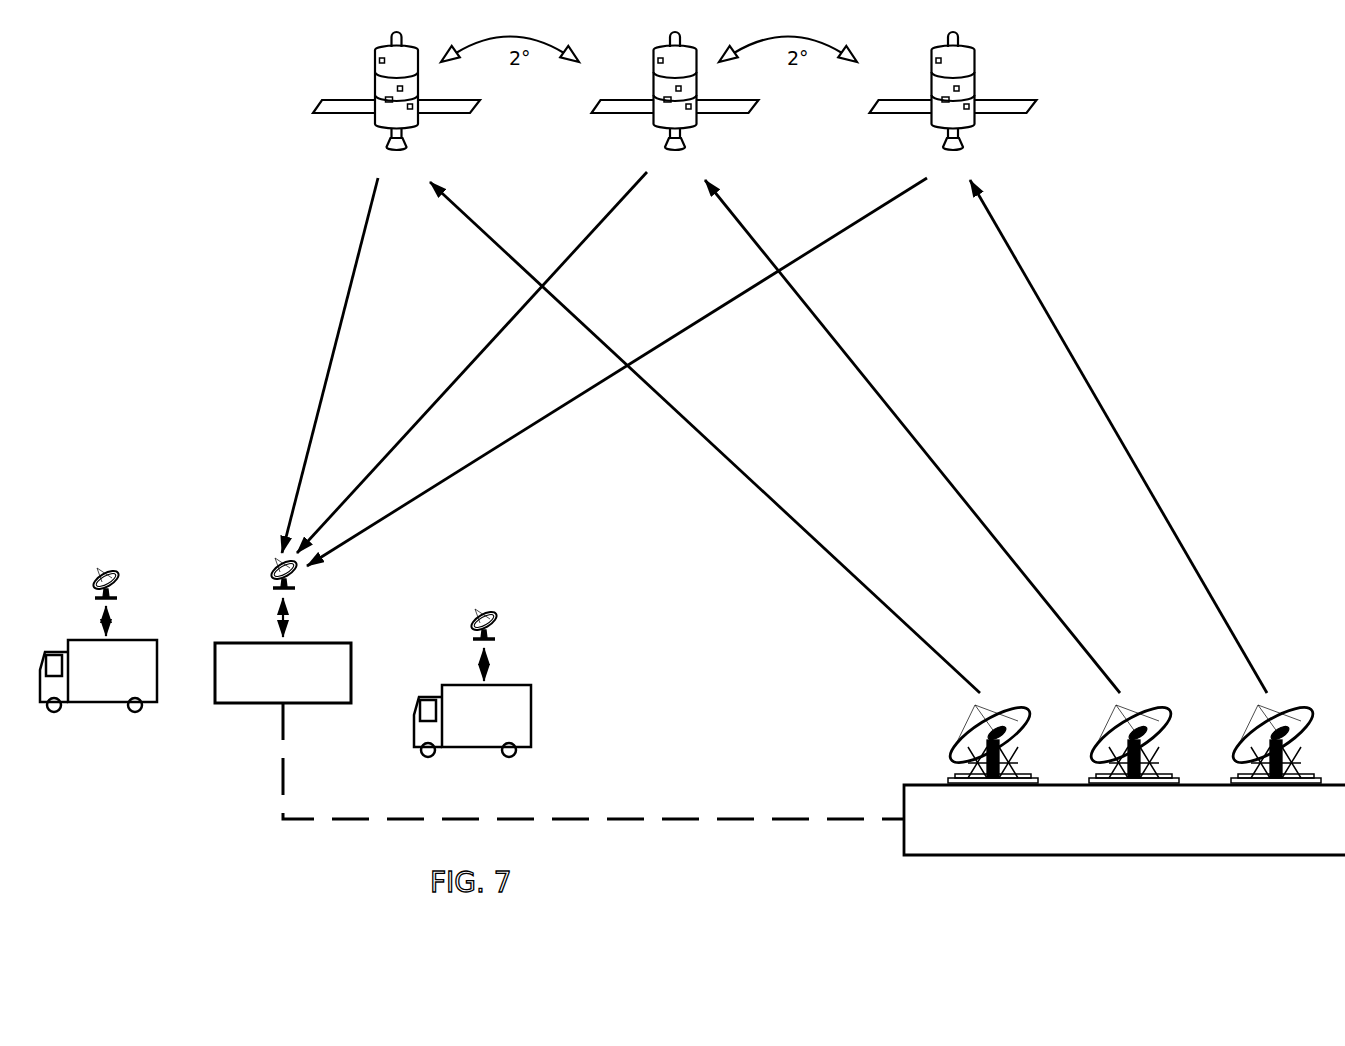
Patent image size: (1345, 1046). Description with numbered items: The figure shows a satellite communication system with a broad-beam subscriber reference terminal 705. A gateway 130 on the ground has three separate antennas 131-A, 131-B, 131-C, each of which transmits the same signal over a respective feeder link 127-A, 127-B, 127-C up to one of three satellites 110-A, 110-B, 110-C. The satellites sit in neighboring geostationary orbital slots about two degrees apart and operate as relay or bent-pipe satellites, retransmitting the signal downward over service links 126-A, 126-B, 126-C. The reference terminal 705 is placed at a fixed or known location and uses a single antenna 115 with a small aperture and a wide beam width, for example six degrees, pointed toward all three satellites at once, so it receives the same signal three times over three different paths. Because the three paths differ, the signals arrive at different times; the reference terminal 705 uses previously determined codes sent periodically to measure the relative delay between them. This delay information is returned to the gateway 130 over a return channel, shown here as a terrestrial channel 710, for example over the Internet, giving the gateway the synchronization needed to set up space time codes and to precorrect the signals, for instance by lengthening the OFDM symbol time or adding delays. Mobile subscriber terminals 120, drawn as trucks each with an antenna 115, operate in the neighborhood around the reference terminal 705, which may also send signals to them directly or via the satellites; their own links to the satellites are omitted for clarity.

The first satellite 110-A is at (385, 88).
The second satellite 110-B is at (663, 88).
The third satellite 110-C is at (941, 88).
The antenna 115 is at (275, 565).
The mobile subscriber terminal 120 is at (128, 681).
The service link 126-A is at (317, 405).
The service link 126-B is at (445, 388).
The service link 126-C is at (520, 432).
The feeder link 127-A is at (705, 445).
The feeder link 127-B is at (880, 415).
The feeder link 127-C is at (1072, 356).
The gateway 130 is at (945, 849).
The gateway antenna 131-A is at (950, 748).
The gateway antenna 131-B is at (1091, 748).
The gateway antenna 131-C is at (1233, 748).
The broad-beam subscriber reference terminal 705 is at (287, 692).
The terrestrial channel 710 is at (690, 819).